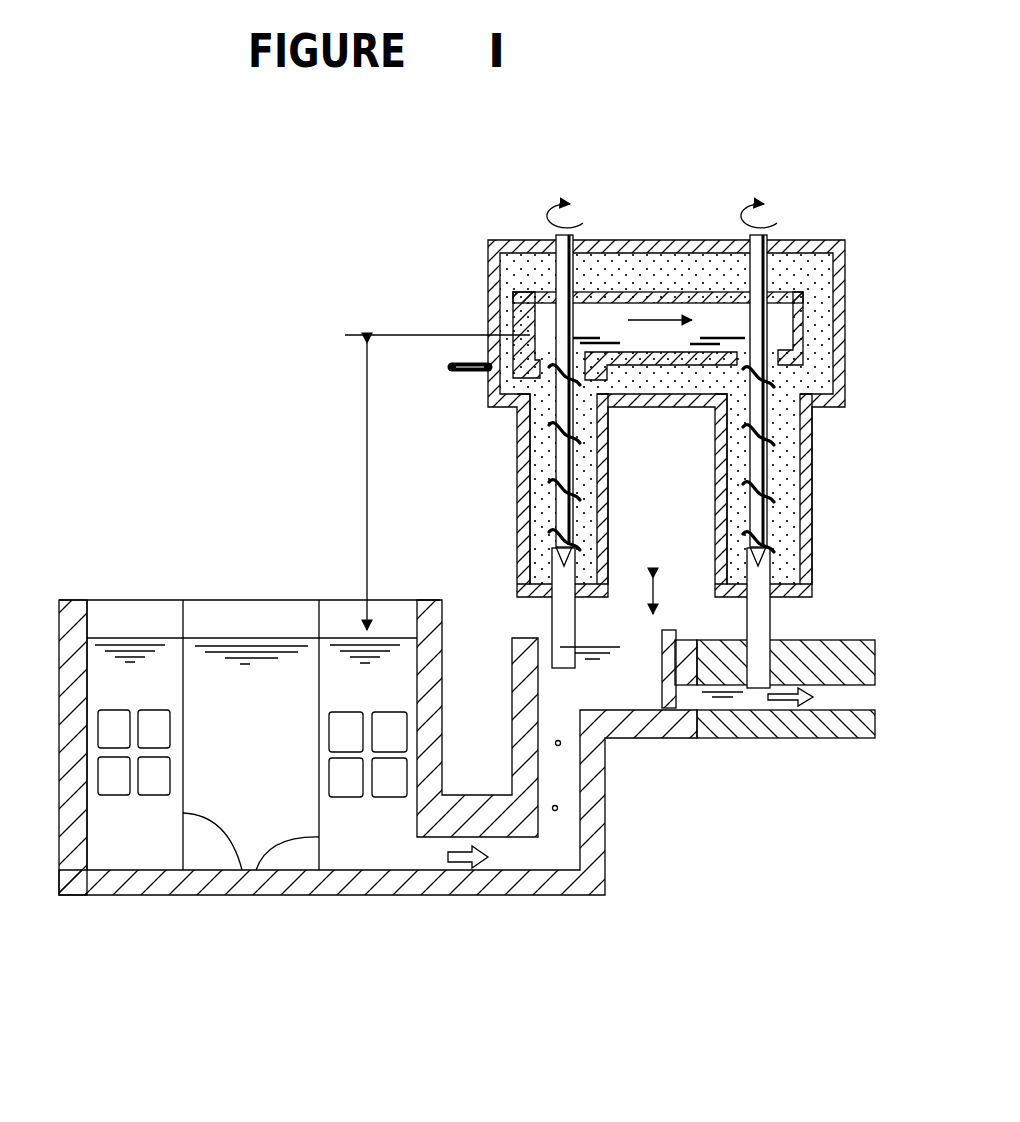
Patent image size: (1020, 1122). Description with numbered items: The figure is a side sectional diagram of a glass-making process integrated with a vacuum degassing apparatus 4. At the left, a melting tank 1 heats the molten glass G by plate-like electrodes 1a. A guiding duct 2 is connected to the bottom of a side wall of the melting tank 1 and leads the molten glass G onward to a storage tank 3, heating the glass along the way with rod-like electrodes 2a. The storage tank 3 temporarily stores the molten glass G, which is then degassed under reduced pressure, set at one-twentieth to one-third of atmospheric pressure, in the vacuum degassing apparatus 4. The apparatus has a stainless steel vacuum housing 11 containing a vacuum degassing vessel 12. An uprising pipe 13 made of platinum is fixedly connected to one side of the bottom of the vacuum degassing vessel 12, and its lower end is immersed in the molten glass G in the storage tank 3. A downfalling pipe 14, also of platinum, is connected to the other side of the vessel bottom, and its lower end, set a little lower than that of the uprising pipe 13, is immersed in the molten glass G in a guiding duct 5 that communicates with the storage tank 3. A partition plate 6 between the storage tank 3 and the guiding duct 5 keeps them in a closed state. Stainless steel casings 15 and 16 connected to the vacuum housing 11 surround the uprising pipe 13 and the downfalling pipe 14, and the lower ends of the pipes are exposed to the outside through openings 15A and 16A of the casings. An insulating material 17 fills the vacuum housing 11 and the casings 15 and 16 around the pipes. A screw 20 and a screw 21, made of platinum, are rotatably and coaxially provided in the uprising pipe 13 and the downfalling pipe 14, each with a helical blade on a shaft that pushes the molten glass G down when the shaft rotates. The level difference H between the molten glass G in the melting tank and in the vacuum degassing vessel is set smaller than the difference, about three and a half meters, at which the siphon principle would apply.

The melting tank 1 is at (73, 627).
The plate-like electrodes 1a is at (243, 870).
The guiding duct 2 is at (490, 884).
The rod-like electrodes 2a is at (561, 745).
The storage tank 3 is at (518, 636).
The vacuum degassing apparatus 4 is at (658, 429).
The guiding duct 5 is at (727, 725).
The partition plate 6 is at (665, 637).
The molten glass G is at (250, 637).
The level difference H is at (431, 482).
The vacuum housing 11 is at (842, 272).
The vacuum degassing vessel 12 is at (647, 272).
The uprising pipe 13 is at (540, 508).
The downfalling pipe 14 is at (780, 538).
The casing 15 is at (523, 470).
The opening 15A is at (574, 603).
The casing 16 is at (800, 484).
The opening 16A is at (770, 603).
The insulating material 17 is at (505, 320).
The screw 20 is at (548, 410).
The screw 21 is at (786, 378).